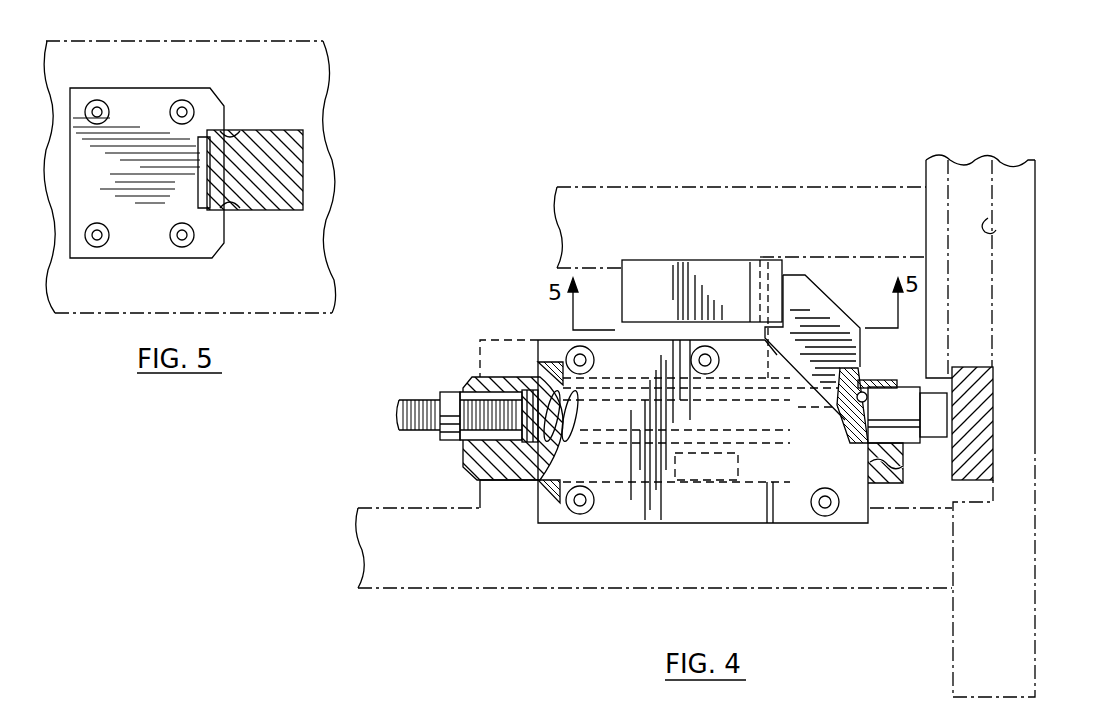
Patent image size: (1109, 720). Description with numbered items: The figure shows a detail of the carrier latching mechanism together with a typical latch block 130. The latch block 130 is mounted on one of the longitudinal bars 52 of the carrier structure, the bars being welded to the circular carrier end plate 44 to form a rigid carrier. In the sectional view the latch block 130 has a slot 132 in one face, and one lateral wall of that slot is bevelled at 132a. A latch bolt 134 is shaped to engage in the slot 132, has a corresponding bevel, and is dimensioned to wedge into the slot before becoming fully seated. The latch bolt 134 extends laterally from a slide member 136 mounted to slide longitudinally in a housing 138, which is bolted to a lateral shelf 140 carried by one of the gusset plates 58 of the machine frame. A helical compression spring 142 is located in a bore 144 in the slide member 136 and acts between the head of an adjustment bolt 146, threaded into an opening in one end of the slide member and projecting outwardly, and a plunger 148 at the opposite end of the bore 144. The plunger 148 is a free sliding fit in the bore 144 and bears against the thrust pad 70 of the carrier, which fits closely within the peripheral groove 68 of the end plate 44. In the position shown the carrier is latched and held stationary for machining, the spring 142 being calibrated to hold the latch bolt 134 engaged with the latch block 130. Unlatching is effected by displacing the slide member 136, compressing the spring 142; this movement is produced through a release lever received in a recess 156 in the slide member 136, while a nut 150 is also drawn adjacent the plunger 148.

In FIG. 4, the first carrier end plate 44 is at (968, 160).
In FIG. 4, the longitudinal bar 52 is at (713, 222).
In FIG. 4, the gusset plate 58 is at (515, 552).
In FIG. 4, the peripheral groove 68 is at (988, 228).
In FIG. 4, the thrust bearing pad 70 is at (995, 437).
In FIG. 5, the latch block 130 is at (147, 88).
In FIG. 4, the latch block 130 is at (663, 301).
In FIG. 5, the slot 132 is at (233, 206).
In FIG. 5, the bevelled wall 132a is at (233, 135).
In FIG. 5, the latch bolt 134 is at (283, 155).
In FIG. 4, the latch bolt 134 is at (808, 300).
In FIG. 4, the slide member 136 is at (473, 468).
In FIG. 4, the housing 138 is at (662, 512).
In FIG. 4, the lateral shelf 140 is at (507, 353).
In FIG. 4, the helical compression spring 142 is at (575, 396).
In FIG. 4, the bore 144 is at (503, 440).
In FIG. 4, the adjustment bolt 146 is at (395, 413).
In FIG. 4, the plunger 148 is at (905, 398).
In FIG. 4, the nut 150 is at (932, 444).
In FIG. 4, the recess 156 is at (704, 478).